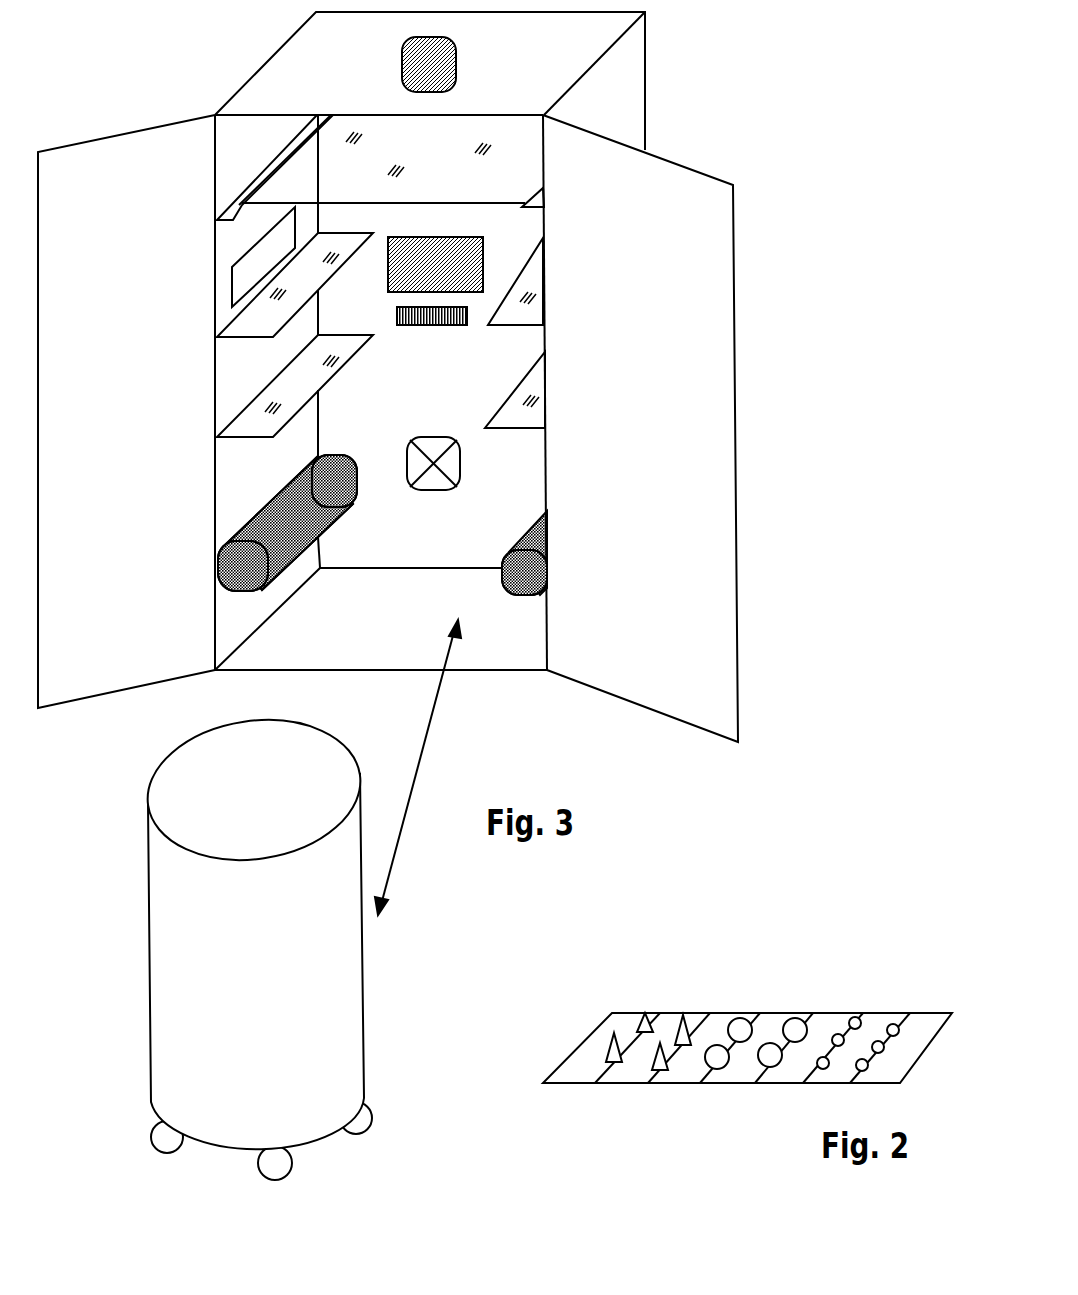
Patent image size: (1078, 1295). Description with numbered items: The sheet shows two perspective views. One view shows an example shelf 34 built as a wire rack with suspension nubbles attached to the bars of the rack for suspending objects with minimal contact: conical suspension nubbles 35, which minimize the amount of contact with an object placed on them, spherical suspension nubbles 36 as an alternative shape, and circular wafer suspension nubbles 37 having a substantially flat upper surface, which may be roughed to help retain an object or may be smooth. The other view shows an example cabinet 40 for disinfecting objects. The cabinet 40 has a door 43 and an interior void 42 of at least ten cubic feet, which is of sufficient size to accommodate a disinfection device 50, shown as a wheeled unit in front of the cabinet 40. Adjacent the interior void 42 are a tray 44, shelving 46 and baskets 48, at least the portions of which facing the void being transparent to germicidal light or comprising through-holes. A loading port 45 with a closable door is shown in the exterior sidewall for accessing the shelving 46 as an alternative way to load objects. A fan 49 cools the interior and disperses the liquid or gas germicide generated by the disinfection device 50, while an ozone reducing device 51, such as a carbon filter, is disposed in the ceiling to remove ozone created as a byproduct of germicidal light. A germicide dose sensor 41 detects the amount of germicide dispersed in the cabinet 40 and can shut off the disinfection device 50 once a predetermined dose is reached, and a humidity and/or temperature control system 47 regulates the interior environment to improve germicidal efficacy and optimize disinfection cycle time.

In FIG. 2, the shelf 34 is at (808, 954).
In FIG. 2, the conical suspension nubbles 35 is at (645, 1013).
In FIG. 2, the spherical suspension nubbles 36 is at (740, 1017).
In FIG. 2, the circular wafer suspension nubbles 37 is at (855, 1020).
In FIG. 3, the cabinet 40 is at (694, 73).
In FIG. 3, the germicide dose sensor 41 is at (433, 316).
In FIG. 3, the interior void 42 is at (447, 368).
In FIG. 3, the door 43 is at (138, 130).
In FIG. 3, the tray 44 is at (380, 167).
In FIG. 3, the loading port 45 is at (265, 257).
In FIG. 3, the shelving 46 is at (302, 273).
In FIG. 3, the humidity and/or temperature control system 47 is at (436, 263).
In FIG. 3, the baskets 48 is at (327, 452).
In FIG. 3, the fan 49 is at (462, 467).
In FIG. 3, the disinfection device 50 is at (255, 943).
In FIG. 3, the ozone reducing device 51 is at (430, 63).